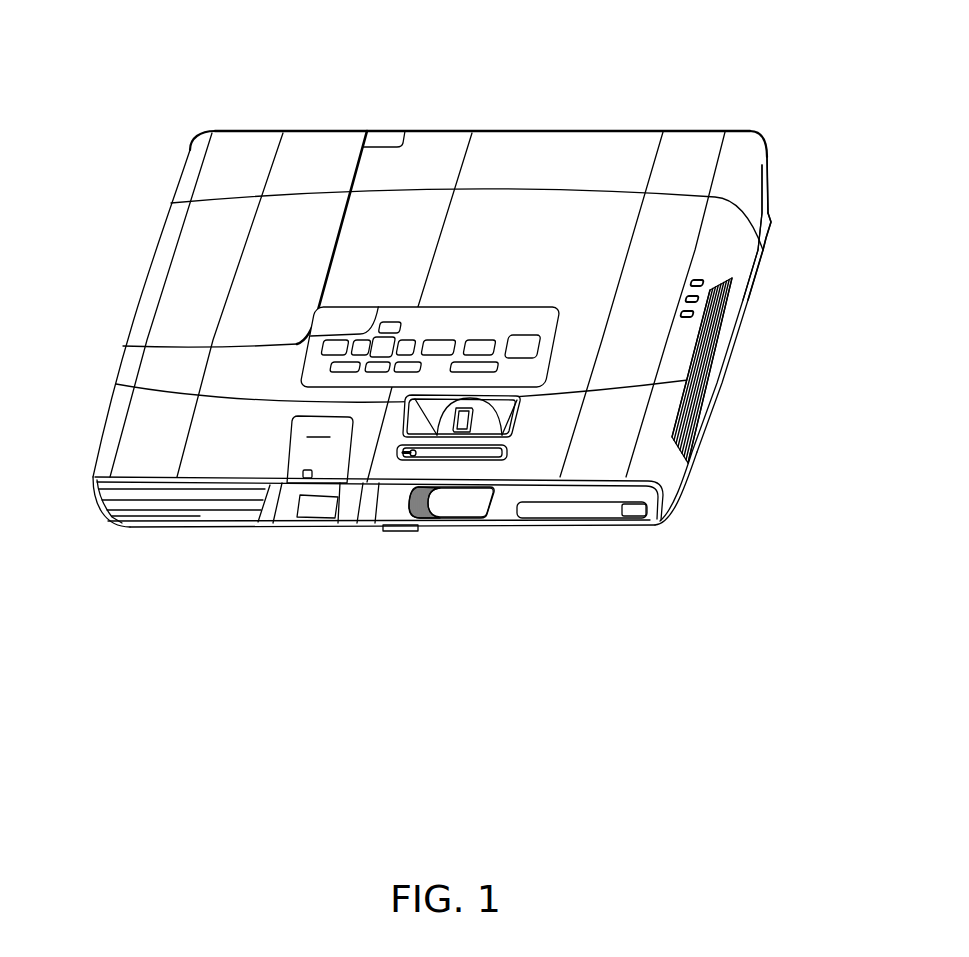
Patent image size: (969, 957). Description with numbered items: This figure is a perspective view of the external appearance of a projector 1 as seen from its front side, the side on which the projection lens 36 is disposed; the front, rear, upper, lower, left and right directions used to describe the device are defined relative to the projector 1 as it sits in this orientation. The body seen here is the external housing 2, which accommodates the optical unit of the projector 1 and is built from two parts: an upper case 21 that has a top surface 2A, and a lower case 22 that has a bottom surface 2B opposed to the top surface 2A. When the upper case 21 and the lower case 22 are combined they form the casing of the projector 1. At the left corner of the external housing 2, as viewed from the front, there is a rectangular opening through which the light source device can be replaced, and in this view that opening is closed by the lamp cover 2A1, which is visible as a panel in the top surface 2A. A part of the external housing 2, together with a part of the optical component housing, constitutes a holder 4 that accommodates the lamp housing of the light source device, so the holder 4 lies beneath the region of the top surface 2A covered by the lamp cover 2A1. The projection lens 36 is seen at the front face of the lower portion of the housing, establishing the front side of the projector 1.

The projector 1 is at (605, 78).
The external housing 2 is at (828, 80).
The holder 4 is at (752, 232).
The top surface 2A is at (527, 157).
The lamp cover 2A1 is at (315, 142).
The bottom surface 2B is at (687, 498).
The upper case 21 is at (763, 193).
The lower case 22 is at (763, 262).
The projection lens 36 is at (457, 502).